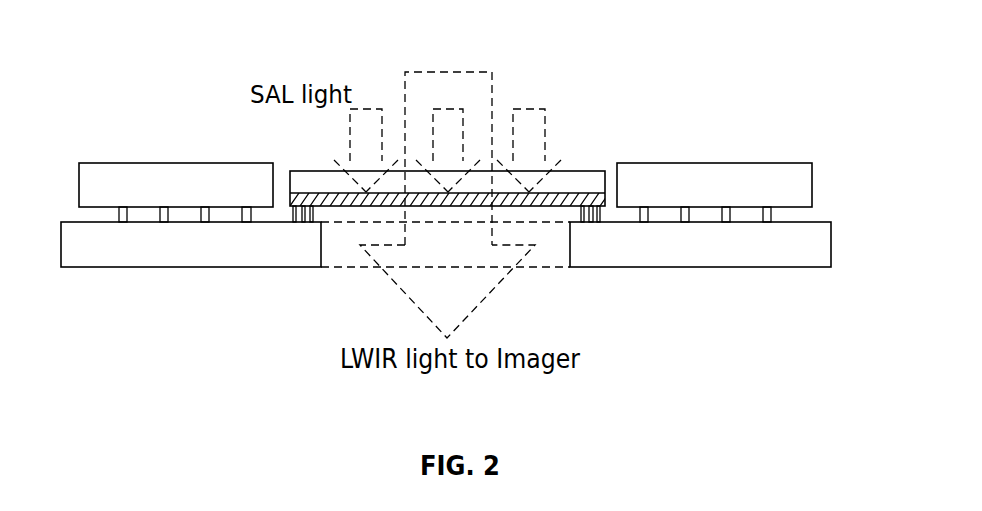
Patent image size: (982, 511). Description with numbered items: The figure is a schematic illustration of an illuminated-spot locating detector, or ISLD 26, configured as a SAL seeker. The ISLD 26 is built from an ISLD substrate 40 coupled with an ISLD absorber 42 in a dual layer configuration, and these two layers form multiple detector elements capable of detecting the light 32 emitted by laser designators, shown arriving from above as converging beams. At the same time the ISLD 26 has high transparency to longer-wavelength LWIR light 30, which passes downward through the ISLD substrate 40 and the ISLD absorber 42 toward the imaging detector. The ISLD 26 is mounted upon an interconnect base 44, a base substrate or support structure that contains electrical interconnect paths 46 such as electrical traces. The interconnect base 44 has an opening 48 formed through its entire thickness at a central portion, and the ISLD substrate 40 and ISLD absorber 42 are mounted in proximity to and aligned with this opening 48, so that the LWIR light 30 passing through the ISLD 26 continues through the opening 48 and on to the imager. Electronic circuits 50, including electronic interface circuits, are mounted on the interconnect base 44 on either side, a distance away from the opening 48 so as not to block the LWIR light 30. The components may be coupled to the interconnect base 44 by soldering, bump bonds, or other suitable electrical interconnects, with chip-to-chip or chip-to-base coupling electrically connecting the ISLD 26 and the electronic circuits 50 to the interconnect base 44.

The illuminated-spot locating detector (ISLD) 26 is at (664, 50).
The LWIR light 30 is at (458, 72).
The laser designator light 32 is at (360, 108).
The ISLD substrate 40 is at (563, 171).
The ISLD absorber 42 is at (588, 193).
The interconnect base 44 is at (147, 252).
The electrical interconnect paths 46 is at (262, 223).
The opening 48 is at (548, 283).
The electronic circuits 50 is at (157, 163).